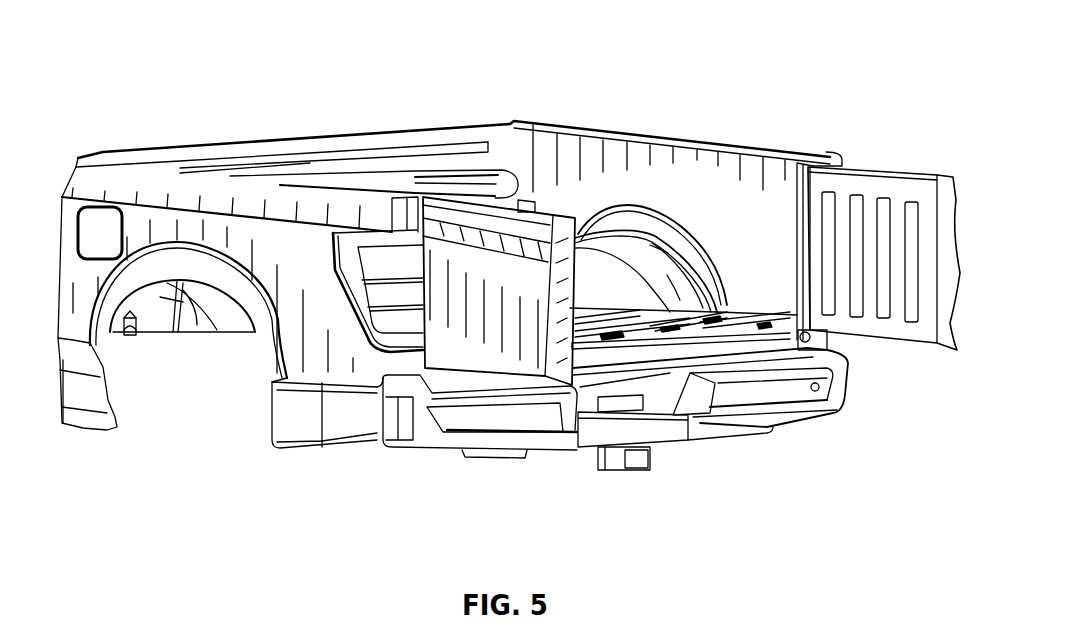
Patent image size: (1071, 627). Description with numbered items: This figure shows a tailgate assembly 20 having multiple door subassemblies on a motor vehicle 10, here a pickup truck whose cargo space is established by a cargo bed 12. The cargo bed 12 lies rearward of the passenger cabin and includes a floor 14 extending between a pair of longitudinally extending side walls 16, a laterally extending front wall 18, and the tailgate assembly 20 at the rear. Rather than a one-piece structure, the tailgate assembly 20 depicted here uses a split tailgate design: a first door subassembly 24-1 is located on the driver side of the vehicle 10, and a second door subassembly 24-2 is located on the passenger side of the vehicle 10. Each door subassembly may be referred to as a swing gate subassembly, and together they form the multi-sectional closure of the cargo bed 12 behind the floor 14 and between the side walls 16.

The motor vehicle 10 is at (611, 78).
The cargo bed 12 is at (526, 168).
The floor 14 is at (753, 330).
The side walls 16 is at (717, 150).
The front wall 18 is at (400, 147).
The tailgate assembly 20 is at (658, 348).
The first door subassembly 24-1 is at (533, 360).
The second door subassembly 24-2 is at (930, 325).